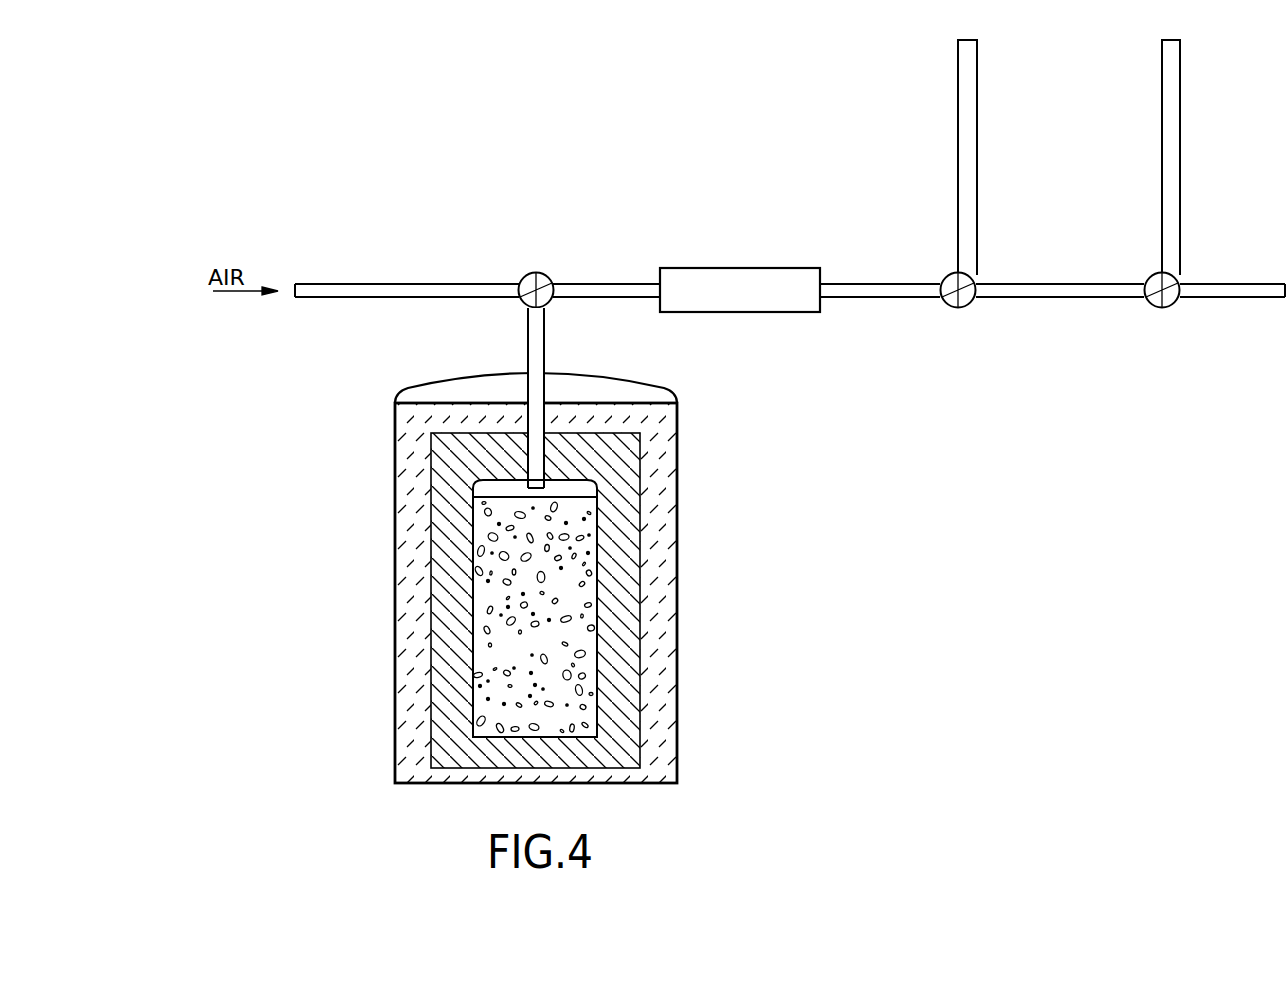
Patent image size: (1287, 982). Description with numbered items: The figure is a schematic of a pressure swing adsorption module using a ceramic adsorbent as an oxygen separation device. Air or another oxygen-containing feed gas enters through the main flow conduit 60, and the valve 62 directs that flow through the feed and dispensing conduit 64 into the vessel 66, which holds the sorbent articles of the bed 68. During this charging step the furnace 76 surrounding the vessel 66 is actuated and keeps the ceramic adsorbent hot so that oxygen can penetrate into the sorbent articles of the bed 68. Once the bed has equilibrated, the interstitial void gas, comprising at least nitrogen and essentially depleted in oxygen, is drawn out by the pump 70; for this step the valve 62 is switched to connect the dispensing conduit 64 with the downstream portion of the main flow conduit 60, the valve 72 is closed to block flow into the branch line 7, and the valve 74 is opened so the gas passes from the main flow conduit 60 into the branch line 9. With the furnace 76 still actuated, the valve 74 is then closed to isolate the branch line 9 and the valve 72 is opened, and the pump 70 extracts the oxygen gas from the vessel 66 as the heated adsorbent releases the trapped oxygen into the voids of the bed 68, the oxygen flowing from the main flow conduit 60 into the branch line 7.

The main flow conduit 60 is at (352, 282).
The valve 62 is at (526, 274).
The feed and dispensing conduit 64 is at (523, 322).
The vessel 66 is at (396, 535).
The bed 68 is at (598, 523).
The pump 70 is at (690, 268).
The valve 72 is at (968, 304).
The valve 74 is at (1172, 304).
The furnace 76 is at (672, 690).
The branch line 7 is at (958, 150).
The branch line 9 is at (1182, 196).